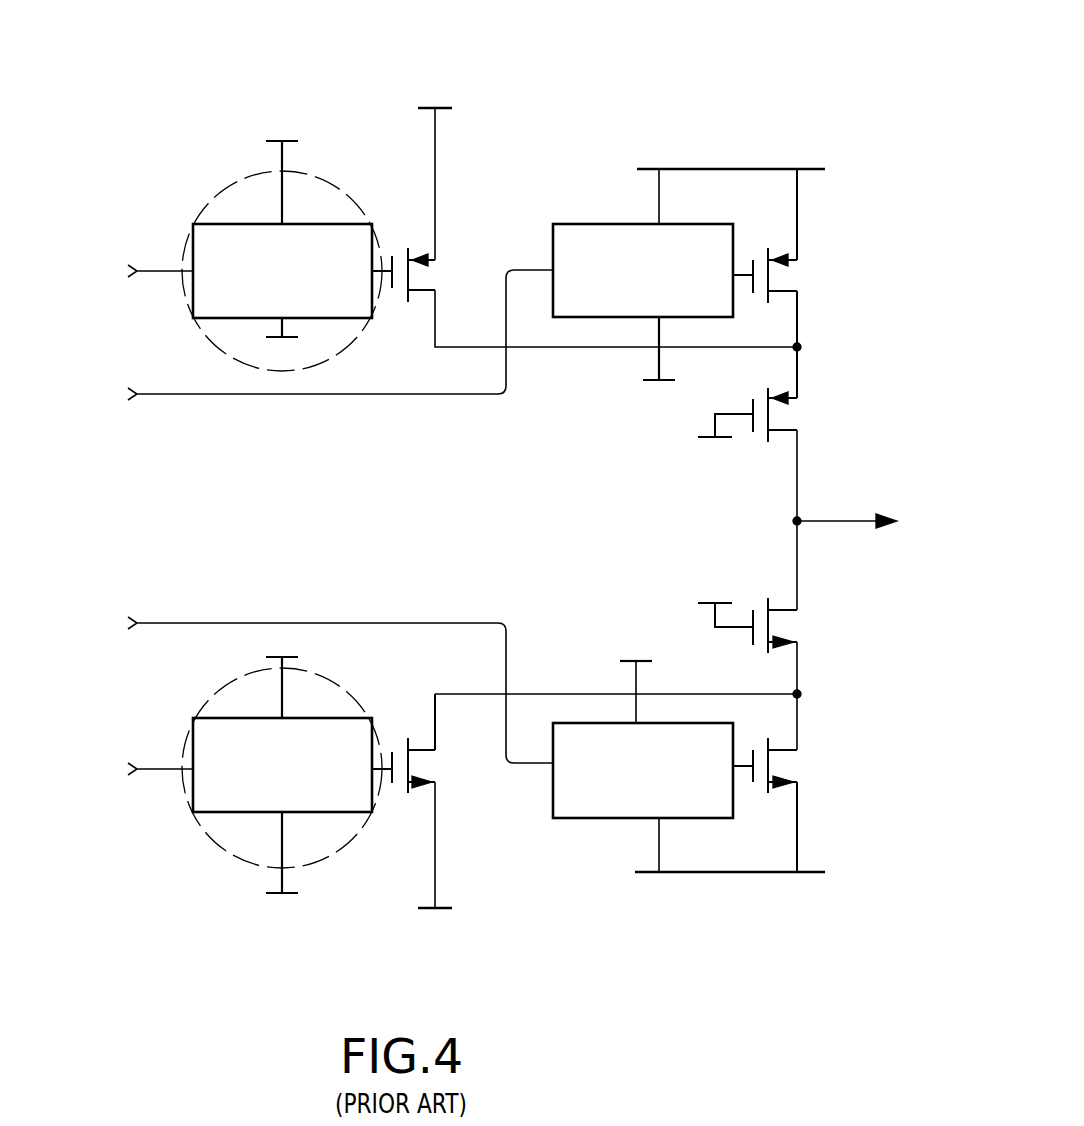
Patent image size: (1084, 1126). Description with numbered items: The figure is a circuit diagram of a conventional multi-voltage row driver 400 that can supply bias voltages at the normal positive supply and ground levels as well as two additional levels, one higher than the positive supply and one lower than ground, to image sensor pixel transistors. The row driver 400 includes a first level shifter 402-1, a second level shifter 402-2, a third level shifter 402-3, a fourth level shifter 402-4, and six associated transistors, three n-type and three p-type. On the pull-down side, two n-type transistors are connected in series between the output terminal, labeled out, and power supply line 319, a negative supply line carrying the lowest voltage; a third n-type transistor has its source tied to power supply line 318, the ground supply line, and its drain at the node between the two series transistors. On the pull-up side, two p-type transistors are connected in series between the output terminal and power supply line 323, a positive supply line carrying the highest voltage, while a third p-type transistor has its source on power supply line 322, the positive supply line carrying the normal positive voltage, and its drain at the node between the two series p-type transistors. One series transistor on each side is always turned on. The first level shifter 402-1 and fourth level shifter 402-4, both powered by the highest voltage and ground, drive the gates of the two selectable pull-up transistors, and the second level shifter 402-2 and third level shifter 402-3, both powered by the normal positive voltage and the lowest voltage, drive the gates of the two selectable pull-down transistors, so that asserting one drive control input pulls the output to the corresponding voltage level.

The multi-voltage row driver 400 is at (80, 80).
The first level shifter 402-1 is at (583, 224).
The second level shifter 402-2 is at (574, 818).
The third level shifter 402-3 is at (212, 800).
The fourth level shifter 402-4 is at (220, 230).
The power supply line 322 is at (440, 108).
The power supply line 323 is at (787, 169).
The power supply line 318 is at (440, 907).
The power supply line 319 is at (672, 873).